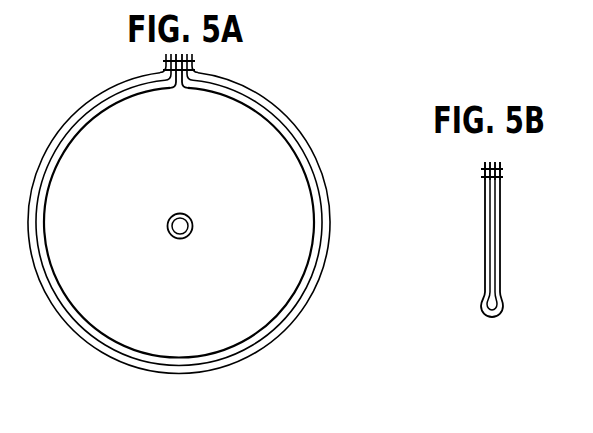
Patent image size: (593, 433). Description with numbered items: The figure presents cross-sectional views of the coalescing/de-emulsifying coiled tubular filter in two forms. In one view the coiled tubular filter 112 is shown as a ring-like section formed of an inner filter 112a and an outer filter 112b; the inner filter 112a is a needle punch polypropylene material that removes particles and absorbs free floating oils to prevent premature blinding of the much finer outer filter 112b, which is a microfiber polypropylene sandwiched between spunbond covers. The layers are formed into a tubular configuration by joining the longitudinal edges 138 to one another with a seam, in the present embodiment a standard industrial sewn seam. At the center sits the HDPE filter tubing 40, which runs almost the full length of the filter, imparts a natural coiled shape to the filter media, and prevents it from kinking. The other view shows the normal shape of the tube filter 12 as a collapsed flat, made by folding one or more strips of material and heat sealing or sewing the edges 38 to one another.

In FIG. 5A, the coalescing/de-emulsifying coiled tubular filter 112 is at (205, 221).
In FIG. 5A, the inner filter 112a is at (292, 144).
In FIG. 5A, the outer filter 112b is at (323, 177).
In FIG. 5A, the longitudinal edges 138 is at (192, 54).
In FIG. 5A, the filter tubing 40 is at (192, 234).
In FIG. 5B, the coalescing/de-emulsifying coiled tubular filter 12 is at (508, 228).
In FIG. 5B, the edges 38 is at (494, 163).